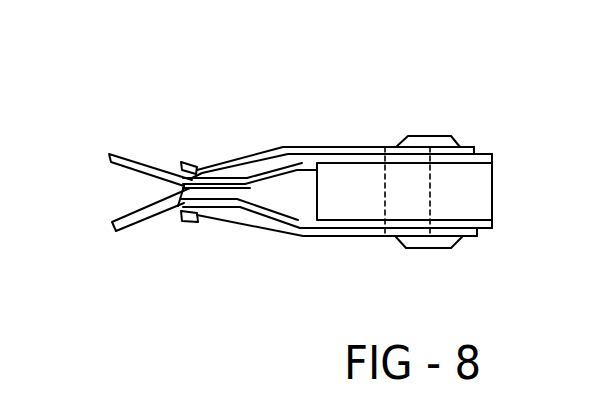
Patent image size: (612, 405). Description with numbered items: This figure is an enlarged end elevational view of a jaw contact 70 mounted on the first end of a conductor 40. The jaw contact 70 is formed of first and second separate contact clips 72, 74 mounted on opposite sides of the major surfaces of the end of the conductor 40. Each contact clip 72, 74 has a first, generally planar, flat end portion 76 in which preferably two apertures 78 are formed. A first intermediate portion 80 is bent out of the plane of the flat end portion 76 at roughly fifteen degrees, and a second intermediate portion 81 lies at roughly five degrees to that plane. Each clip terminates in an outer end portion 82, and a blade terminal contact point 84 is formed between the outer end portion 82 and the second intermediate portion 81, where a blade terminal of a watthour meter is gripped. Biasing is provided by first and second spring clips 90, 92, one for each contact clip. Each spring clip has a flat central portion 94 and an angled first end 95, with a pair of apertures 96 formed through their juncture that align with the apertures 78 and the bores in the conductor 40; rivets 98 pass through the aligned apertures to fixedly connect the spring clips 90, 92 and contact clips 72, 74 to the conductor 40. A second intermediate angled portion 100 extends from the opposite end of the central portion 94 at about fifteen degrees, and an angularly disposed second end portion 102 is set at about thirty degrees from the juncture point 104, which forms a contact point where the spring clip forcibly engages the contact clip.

The jaw contact 70 is at (130, 86).
The conductor 40 is at (338, 172).
The first contact clip 72 is at (125, 153).
The second contact clip 74 is at (110, 239).
The flat end portion 76 is at (383, 228).
The apertures 78 is at (389, 240).
The first intermediate portion 80 is at (263, 220).
The second intermediate portion 81 is at (233, 200).
The outer end portion 82 is at (141, 226).
The blade terminal contact point 84 is at (178, 200).
The first spring clip 90 is at (218, 150).
The second spring clip 92 is at (285, 250).
The central portion 94 is at (306, 144).
The first end 95 is at (474, 148).
The apertures 96 is at (387, 146).
The rivets 98 is at (419, 136).
The second intermediate angled portion 100 is at (240, 153).
The second end portion 102 is at (193, 173).
The juncture point 104 is at (180, 200).